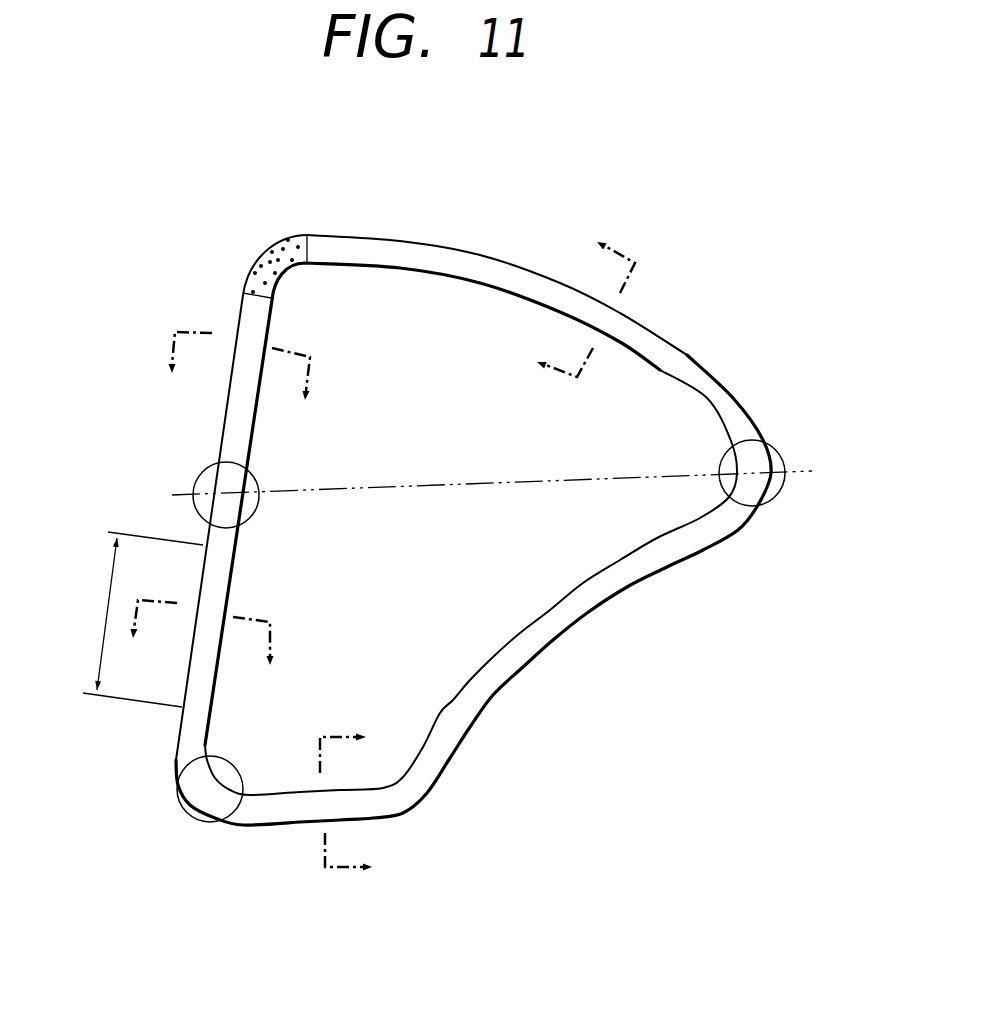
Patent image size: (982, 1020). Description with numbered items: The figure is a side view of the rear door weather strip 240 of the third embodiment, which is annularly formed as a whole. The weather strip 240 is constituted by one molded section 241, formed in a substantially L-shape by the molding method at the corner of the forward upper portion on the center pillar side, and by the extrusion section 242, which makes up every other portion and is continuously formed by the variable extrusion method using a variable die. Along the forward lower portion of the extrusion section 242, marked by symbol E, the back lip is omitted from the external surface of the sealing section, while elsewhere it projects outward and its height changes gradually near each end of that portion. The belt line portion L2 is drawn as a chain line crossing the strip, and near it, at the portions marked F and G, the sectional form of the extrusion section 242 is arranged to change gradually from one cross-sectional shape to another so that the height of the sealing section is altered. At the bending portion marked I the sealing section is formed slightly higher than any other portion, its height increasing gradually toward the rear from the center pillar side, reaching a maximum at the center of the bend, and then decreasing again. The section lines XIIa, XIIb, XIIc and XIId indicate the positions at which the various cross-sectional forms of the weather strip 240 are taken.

The weather strip 240 is at (512, 215).
The molded section 241 is at (273, 238).
The extrusion section 242 is at (687, 355).
The belt line portion L2 is at (512, 476).
The portion F is at (250, 473).
The portion G is at (780, 490).
The portion I is at (213, 823).
The forward lower portion E is at (139, 619).
The section line XIIa is at (553, 297).
The section line XIIb is at (236, 370).
The section line XIIc is at (198, 653).
The section line XIId is at (372, 803).